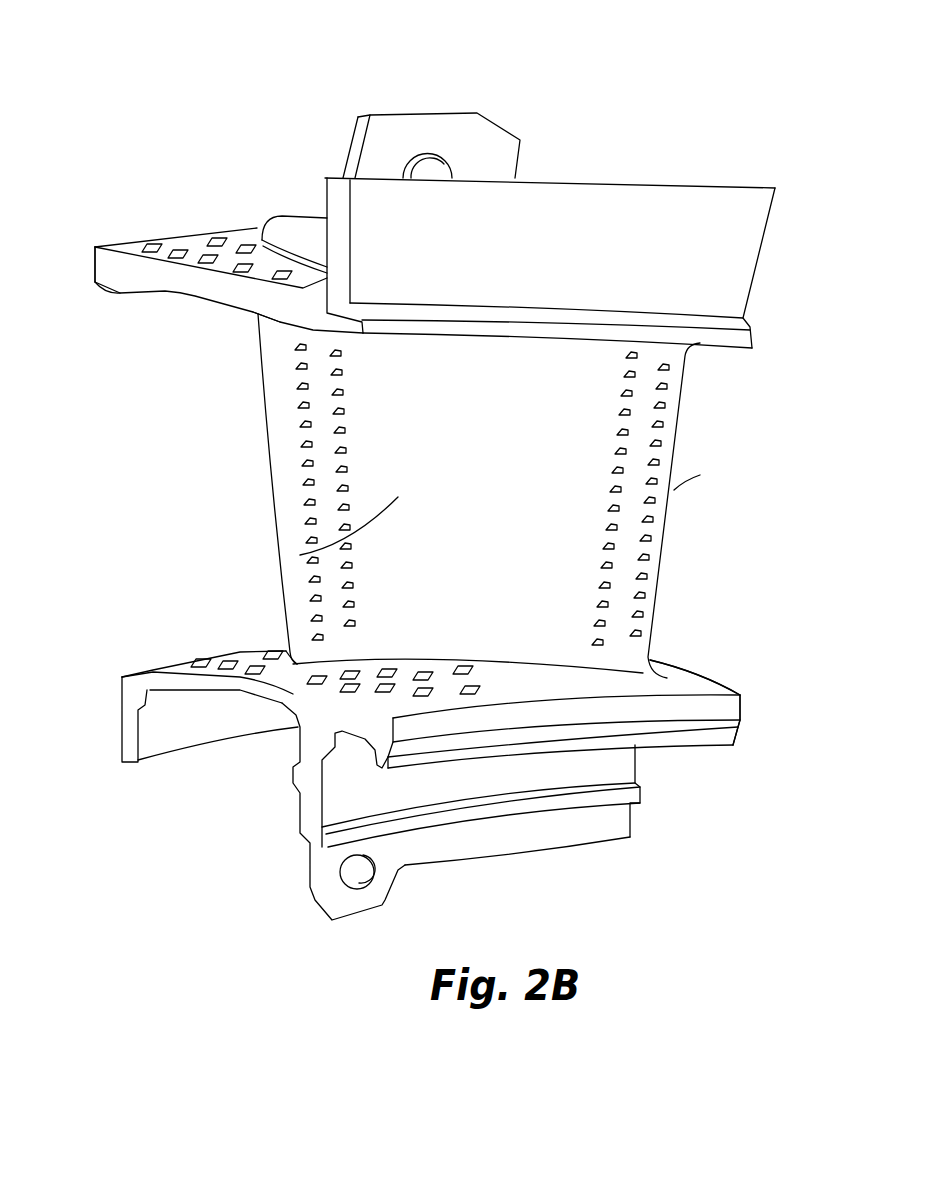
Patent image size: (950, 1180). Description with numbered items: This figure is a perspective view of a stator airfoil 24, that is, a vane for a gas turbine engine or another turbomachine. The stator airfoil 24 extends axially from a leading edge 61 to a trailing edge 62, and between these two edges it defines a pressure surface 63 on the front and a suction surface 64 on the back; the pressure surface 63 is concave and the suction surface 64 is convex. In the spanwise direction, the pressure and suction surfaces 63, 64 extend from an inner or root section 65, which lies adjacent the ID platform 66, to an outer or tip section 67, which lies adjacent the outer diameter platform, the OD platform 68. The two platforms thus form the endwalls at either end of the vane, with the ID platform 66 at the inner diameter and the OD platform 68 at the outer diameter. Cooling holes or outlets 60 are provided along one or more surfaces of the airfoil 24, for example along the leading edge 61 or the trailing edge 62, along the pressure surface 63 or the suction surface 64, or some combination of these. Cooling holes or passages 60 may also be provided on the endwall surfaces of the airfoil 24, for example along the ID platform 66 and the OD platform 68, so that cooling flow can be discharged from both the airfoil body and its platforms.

The stator airfoil 24 is at (127, 107).
The cooling holes 60 is at (217, 237).
The leading edge 61 is at (267, 380).
The trailing edge 62 is at (662, 553).
The pressure surface 63 is at (398, 497).
The suction surface 64 is at (669, 494).
The inner section 65 is at (302, 645).
The ID platform 66 is at (730, 705).
The outer section 67 is at (278, 340).
The OD platform 68 is at (112, 278).